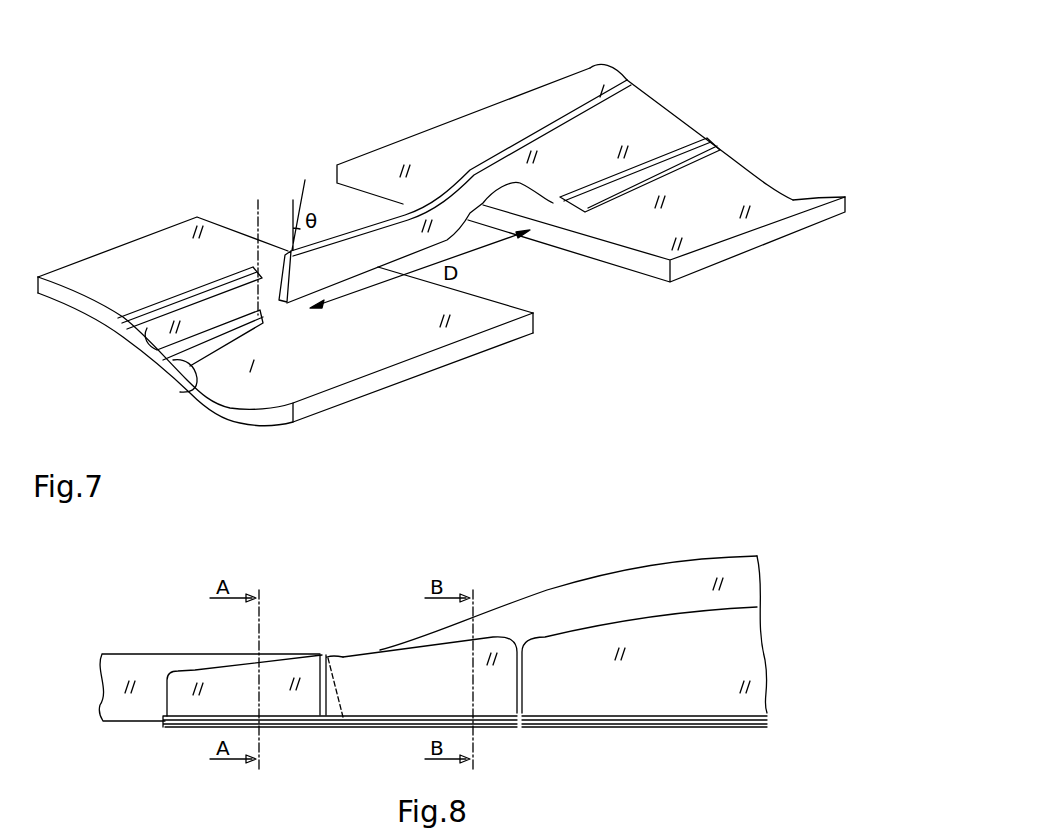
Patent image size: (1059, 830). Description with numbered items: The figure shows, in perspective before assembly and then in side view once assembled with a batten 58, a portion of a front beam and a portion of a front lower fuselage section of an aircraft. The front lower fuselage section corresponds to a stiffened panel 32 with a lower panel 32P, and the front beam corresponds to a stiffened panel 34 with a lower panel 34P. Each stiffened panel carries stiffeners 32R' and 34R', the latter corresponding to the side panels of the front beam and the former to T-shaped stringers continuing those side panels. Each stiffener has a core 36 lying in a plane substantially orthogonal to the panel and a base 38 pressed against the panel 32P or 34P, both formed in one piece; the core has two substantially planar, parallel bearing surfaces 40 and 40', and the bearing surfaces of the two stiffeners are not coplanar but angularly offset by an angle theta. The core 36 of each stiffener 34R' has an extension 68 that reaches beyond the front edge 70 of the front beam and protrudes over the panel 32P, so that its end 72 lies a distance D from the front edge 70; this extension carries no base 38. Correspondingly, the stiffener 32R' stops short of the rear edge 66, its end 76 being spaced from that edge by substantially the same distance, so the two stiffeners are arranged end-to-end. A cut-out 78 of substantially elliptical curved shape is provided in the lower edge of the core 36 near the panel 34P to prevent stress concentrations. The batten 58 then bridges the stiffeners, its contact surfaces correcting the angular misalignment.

In FIG. 7, the stiffened panel 32 is at (380, 405).
In FIG. 7, the stiffened panel 34 is at (731, 272).
In FIG. 7, the panel 32P is at (442, 330).
In FIG. 7, the panel 34P is at (793, 200).
In FIG. 7, the stiffener 32R' is at (174, 244).
In FIG. 8, the stiffener 32R' is at (200, 645).
In FIG. 7, the stiffener 34R' is at (548, 93).
In FIG. 8, the stiffener 34R' is at (576, 592).
In FIG. 7, the core 36 is at (182, 275).
In FIG. 7, the base 38 is at (180, 392).
In FIG. 7, the bearing surface 40 is at (309, 204).
In FIG. 7, the bearing surface 40' is at (336, 197).
In FIG. 8, the batten 58 is at (380, 716).
In FIG. 7, the rear edge 66 is at (518, 308).
In FIG. 7, the extension 68 is at (400, 231).
In FIG. 7, the front edge 70 is at (645, 272).
In FIG. 7, the end 72 is at (287, 303).
In FIG. 7, the end 76 is at (291, 308).
In FIG. 7, the cut-out 78 is at (494, 197).